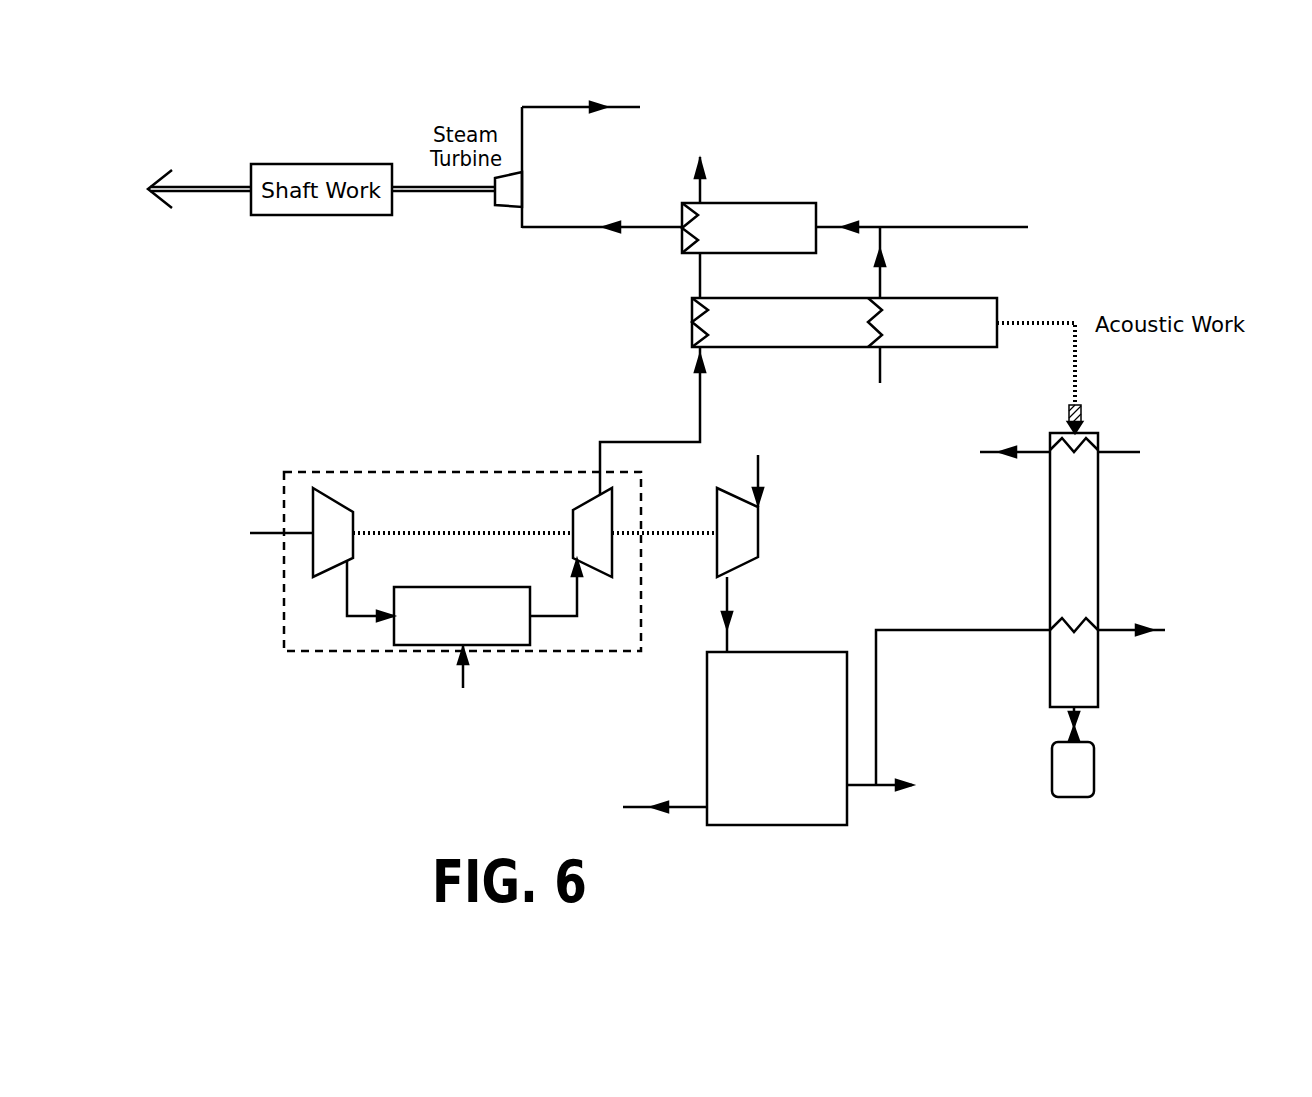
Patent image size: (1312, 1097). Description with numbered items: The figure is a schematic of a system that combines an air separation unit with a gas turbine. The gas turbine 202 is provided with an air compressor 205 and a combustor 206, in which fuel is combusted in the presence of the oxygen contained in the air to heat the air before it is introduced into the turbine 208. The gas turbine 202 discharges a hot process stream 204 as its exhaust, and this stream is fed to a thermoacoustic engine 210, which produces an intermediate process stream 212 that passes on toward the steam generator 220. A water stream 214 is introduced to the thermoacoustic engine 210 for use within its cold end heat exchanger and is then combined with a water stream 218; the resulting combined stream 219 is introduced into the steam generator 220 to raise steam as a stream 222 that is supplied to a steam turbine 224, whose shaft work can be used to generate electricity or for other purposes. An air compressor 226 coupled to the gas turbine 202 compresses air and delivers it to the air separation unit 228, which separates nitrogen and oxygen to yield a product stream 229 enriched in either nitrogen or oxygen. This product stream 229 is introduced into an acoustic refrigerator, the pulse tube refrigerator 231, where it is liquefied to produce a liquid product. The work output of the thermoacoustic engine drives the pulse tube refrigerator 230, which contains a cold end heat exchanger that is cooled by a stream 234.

The gas turbine 202 is at (360, 660).
The hot process stream 204 is at (700, 408).
The air compressor 205 is at (330, 548).
The combustor 206 is at (518, 633).
The turbine 208 is at (603, 560).
The thermoacoustic engine 210 is at (795, 347).
The intermediate process stream 212 is at (700, 288).
The water stream 214 is at (880, 368).
The water stream 218 is at (937, 227).
The water line to HRSG 219 is at (850, 227).
The steam generator 220 is at (800, 203).
The steam stream 222 is at (653, 225).
The steam turbine 224 is at (522, 190).
The air compressor 226 is at (755, 540).
The air separation unit 228 is at (800, 825).
The product stream 229 is at (876, 715).
The pulse tube refrigerator 230 is at (1152, 630).
The pulse tube refrigerator 231 is at (1098, 495).
The cooling stream 234 is at (1130, 452).